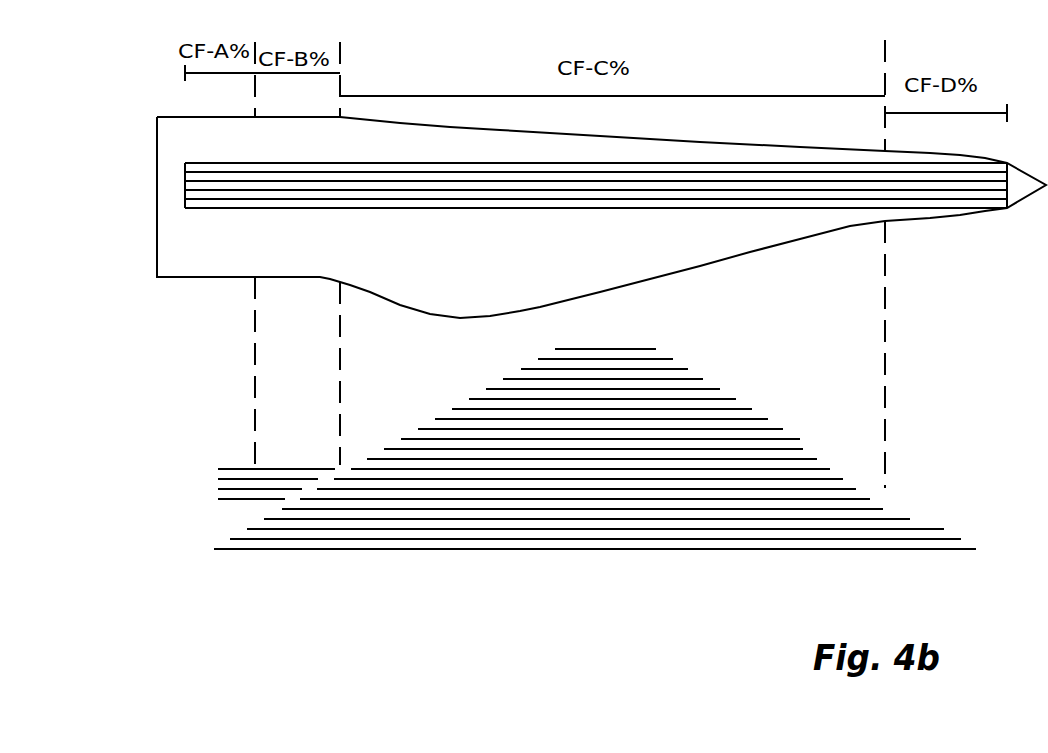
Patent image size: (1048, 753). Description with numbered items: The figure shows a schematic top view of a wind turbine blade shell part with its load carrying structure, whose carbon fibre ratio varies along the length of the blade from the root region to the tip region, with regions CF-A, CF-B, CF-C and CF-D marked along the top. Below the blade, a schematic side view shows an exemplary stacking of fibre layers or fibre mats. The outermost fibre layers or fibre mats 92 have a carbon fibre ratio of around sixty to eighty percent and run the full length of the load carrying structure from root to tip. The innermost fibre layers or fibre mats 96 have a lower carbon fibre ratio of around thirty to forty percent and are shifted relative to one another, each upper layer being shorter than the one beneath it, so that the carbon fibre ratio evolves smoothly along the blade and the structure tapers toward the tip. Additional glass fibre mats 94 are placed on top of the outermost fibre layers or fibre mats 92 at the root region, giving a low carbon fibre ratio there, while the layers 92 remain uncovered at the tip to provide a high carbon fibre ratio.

The outermost fibre layers or fibre mats 92 is at (201, 500).
The additional glass fibre mats 94 is at (212, 500).
The innermost fibre layers or fibre mats 96 is at (903, 323).